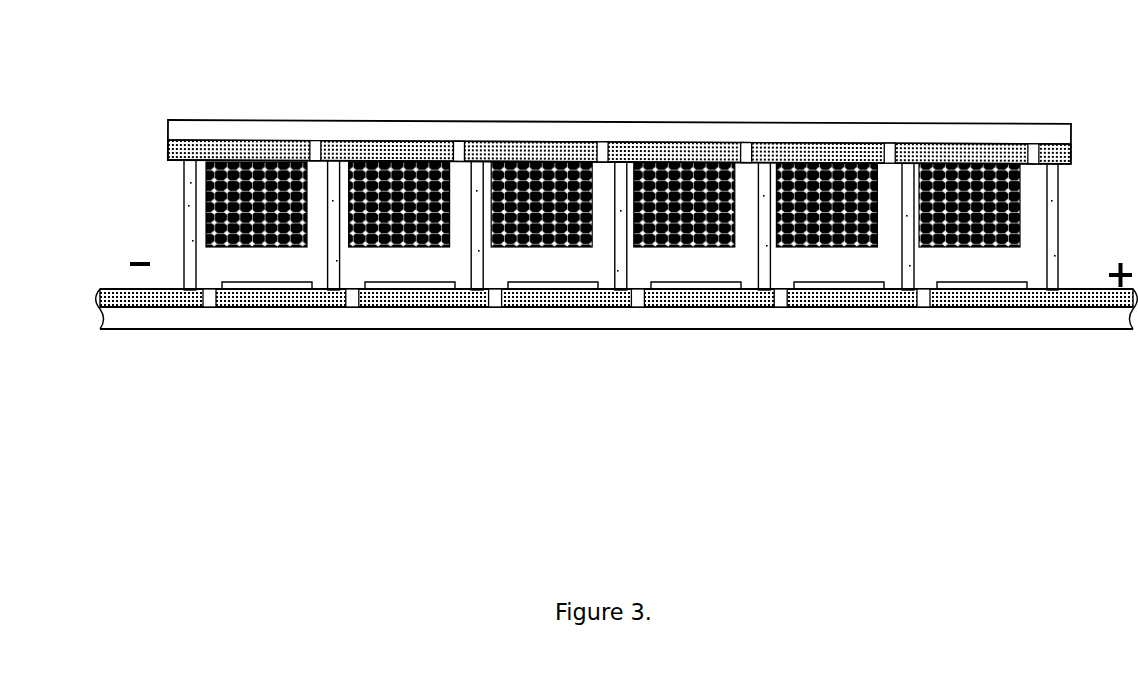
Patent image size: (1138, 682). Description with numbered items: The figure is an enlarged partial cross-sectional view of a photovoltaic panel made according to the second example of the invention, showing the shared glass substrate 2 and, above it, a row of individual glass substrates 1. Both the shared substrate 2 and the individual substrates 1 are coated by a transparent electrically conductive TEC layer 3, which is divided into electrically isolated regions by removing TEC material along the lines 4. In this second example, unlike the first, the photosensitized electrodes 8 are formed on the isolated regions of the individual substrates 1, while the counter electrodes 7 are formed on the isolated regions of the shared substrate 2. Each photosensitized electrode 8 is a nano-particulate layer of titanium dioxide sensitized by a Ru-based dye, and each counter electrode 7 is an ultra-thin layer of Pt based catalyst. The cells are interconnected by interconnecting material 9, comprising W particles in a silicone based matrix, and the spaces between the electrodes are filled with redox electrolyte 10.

The individual substrate 1 is at (720, 130).
The shared substrate 2 is at (123, 318).
The TEC layer 3 is at (263, 147).
The lines 4 is at (315, 140).
The counter electrode 7 is at (407, 285).
The photosensitized electrode 8 is at (527, 178).
The interconnecting material 9 is at (912, 285).
The redox electrolyte 10 is at (252, 270).